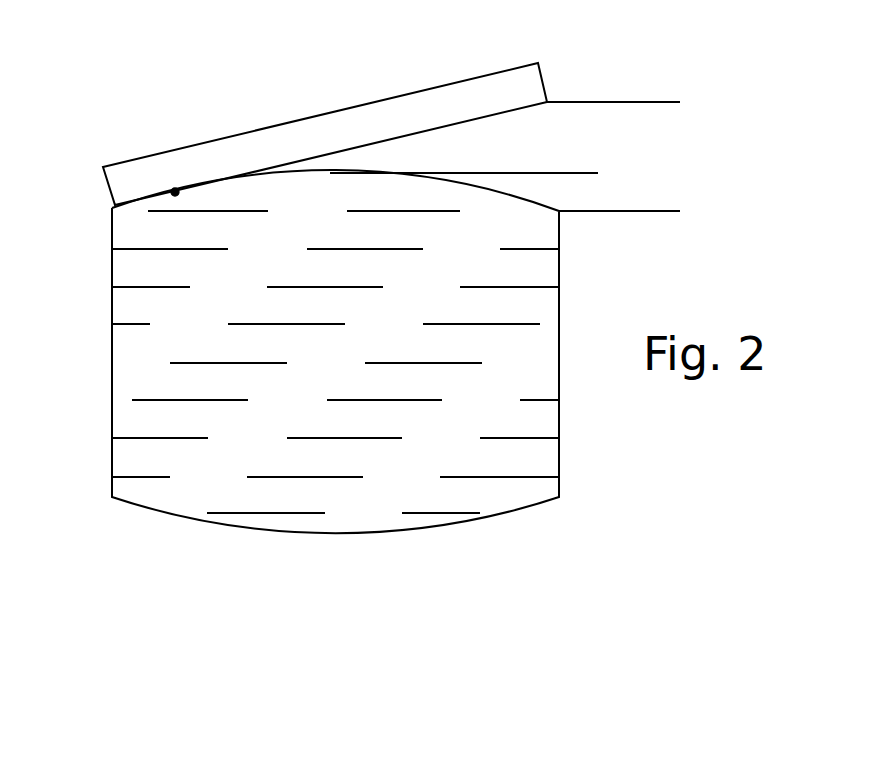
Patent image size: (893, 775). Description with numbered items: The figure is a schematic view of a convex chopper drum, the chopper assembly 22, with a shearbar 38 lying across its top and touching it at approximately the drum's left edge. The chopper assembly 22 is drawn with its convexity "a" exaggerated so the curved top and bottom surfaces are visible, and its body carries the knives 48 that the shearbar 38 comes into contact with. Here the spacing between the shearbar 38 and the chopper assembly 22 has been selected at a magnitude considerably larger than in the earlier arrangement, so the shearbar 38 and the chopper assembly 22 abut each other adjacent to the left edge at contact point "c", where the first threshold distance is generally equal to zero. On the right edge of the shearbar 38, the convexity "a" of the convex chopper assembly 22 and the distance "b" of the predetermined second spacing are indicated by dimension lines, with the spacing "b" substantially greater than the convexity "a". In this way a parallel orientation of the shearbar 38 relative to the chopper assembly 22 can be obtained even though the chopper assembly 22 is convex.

The chopper assembly 22 is at (447, 554).
The shearbar 38 is at (357, 147).
The knives 48 is at (152, 438).
The contact point c is at (175, 190).
The convexity a is at (592, 145).
The spacing b is at (669, 116).